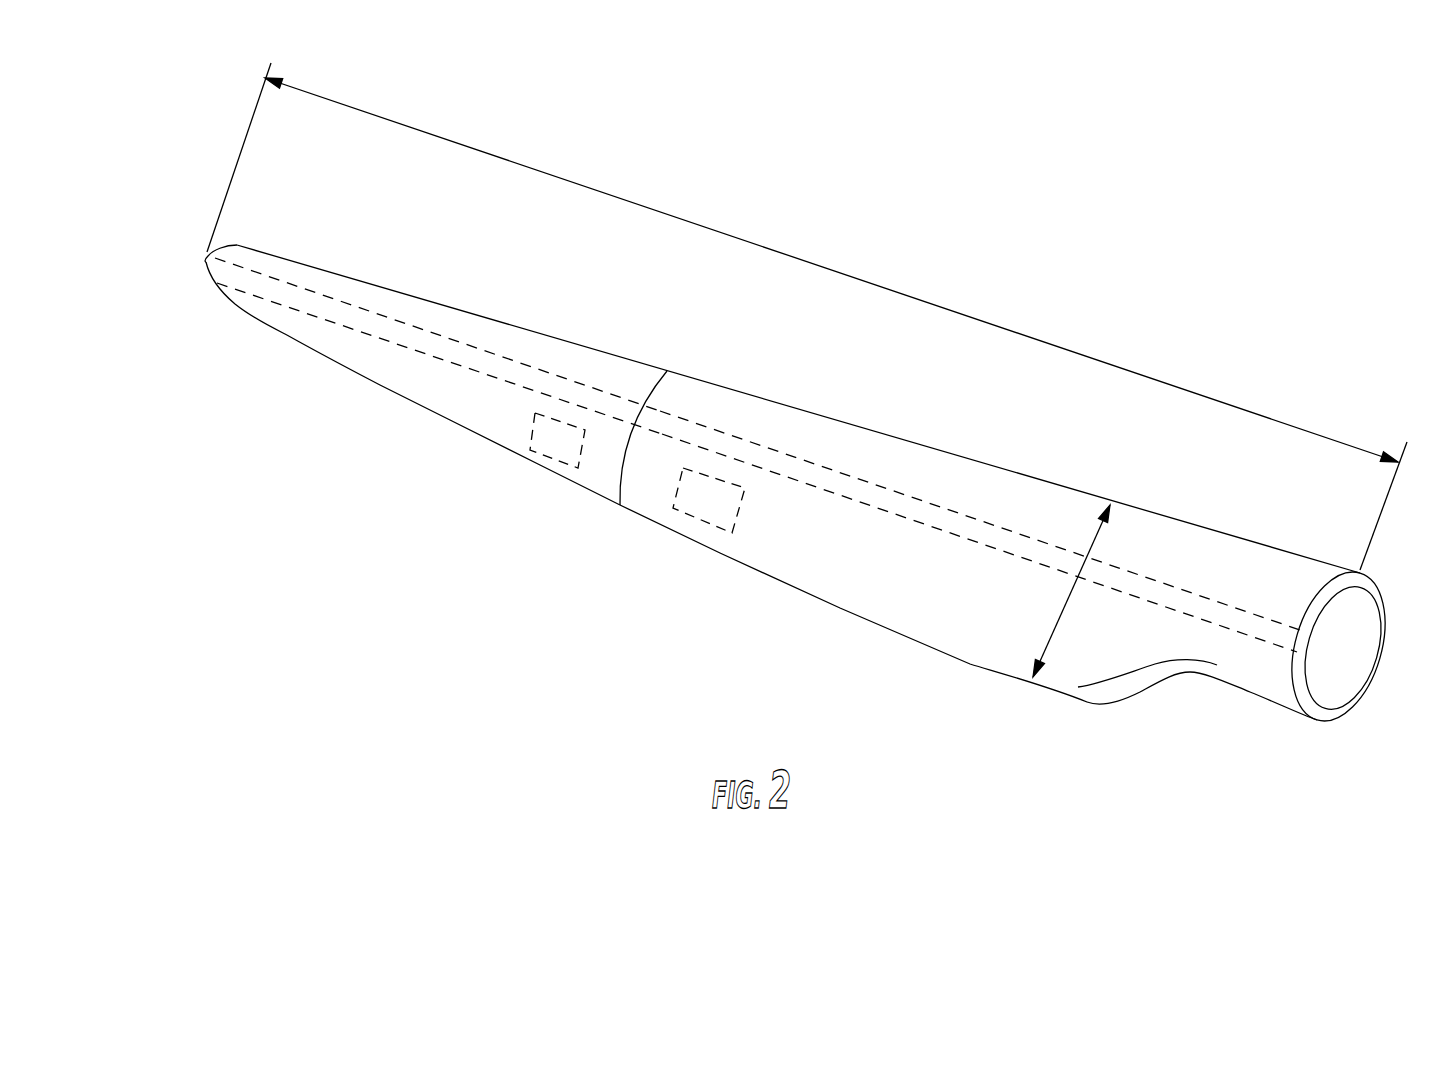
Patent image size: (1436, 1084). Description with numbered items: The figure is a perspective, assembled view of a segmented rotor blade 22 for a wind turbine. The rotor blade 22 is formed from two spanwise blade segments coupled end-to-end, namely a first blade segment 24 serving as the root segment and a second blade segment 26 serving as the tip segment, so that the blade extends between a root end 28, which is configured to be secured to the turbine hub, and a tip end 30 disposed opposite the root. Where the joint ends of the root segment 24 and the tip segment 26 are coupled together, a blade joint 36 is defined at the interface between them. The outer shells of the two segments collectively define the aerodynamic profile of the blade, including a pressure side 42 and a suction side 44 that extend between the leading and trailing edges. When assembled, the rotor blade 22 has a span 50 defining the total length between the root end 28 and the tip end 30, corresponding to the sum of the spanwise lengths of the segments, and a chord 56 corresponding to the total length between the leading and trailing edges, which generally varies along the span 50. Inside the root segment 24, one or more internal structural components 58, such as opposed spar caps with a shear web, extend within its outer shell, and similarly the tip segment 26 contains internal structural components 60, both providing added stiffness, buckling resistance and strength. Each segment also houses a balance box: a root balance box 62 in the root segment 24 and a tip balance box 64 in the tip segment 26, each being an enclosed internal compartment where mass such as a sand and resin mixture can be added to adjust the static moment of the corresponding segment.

The segmented rotor blade 22 is at (1294, 189).
The first blade segment 24 is at (982, 468).
The second blade segment 26 is at (510, 322).
The root end 28 is at (1327, 720).
The tip end 30 is at (205, 262).
The blade joint 36 is at (660, 381).
The pressure side 42 is at (930, 605).
The suction side 44 is at (897, 439).
The span 50 is at (840, 273).
The chord 56 is at (1113, 530).
The internal structural components 58 is at (793, 453).
The internal structural components 60 is at (415, 325).
The root balance box 62 is at (700, 513).
The tip balance box 64 is at (553, 455).